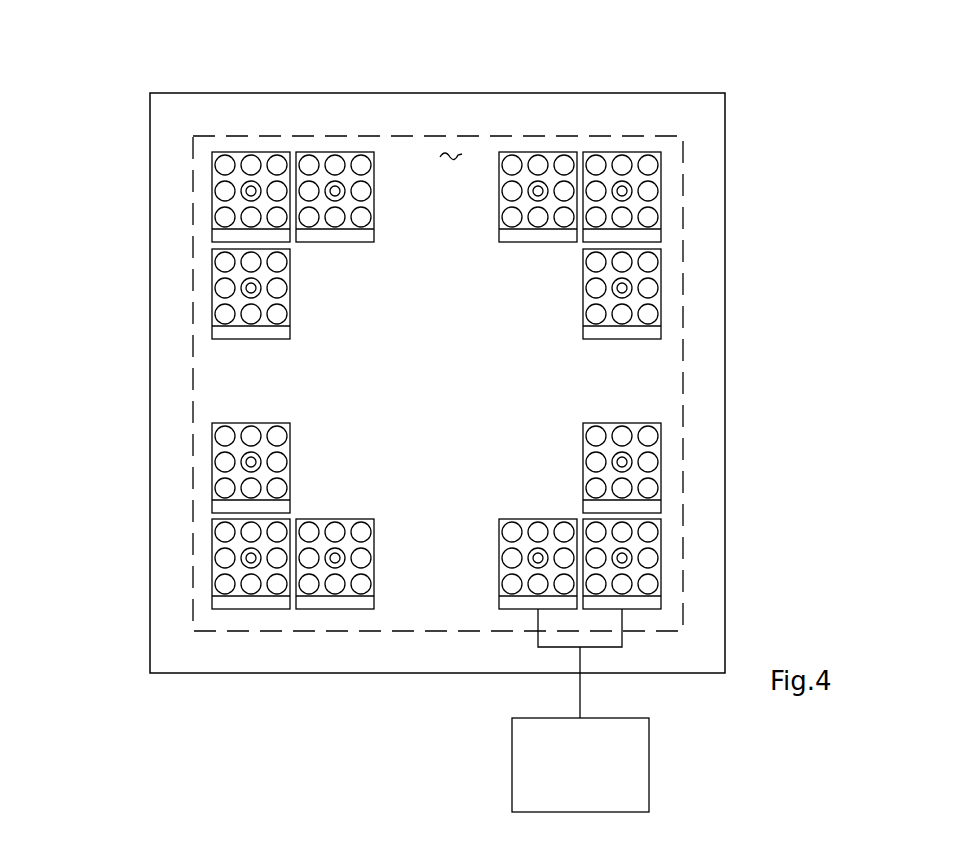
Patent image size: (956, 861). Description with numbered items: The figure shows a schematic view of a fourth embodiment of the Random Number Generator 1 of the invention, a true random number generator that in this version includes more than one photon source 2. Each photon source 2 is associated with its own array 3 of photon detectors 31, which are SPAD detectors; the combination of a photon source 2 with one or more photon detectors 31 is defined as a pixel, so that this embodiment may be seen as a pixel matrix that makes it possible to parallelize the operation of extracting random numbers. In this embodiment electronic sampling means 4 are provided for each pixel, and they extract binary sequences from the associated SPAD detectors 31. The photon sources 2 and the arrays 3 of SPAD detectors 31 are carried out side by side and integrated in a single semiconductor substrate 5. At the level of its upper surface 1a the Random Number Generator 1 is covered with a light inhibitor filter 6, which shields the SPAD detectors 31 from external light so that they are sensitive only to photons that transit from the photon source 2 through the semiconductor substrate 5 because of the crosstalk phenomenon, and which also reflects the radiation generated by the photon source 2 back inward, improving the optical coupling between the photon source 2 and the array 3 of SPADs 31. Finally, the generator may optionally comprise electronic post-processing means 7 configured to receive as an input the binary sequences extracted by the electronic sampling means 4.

The Random Number Generator 1 is at (414, 407).
The upper surface 1a is at (452, 155).
The photon source 2 is at (253, 462).
The array of photon detectors 3 is at (491, 432).
The photon detector 31 is at (250, 437).
The electronic sampling means 4 is at (277, 506).
The semiconductor substrate 5 is at (565, 118).
The light inhibitor filter 6 is at (670, 148).
The electronic post-processing means 7 is at (633, 786).